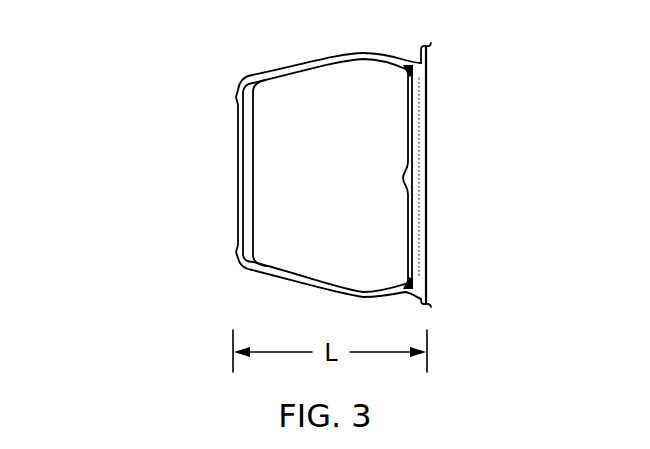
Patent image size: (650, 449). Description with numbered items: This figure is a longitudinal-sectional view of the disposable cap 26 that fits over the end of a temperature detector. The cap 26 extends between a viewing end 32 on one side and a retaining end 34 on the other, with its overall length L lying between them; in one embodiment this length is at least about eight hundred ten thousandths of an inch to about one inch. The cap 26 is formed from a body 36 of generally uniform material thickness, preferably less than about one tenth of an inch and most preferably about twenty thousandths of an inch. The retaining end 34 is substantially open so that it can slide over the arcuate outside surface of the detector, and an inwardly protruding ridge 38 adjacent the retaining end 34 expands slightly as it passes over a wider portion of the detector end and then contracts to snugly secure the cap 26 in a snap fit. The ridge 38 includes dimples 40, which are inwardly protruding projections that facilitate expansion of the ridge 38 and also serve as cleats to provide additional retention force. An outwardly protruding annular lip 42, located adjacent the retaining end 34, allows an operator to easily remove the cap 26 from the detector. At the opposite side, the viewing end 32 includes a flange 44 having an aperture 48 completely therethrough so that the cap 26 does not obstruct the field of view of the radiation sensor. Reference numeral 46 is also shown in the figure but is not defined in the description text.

The cap 26 is at (77, 113).
The viewing end 32 is at (108, 175).
The retaining end 34 is at (513, 193).
The body 36 is at (319, 57).
The ridge 38 is at (415, 95).
The dimples 40 is at (411, 72).
The annular lip 42 is at (428, 53).
The flange 44 is at (237, 95).
The corner 46 is at (238, 80).
The aperture 48 is at (238, 122).